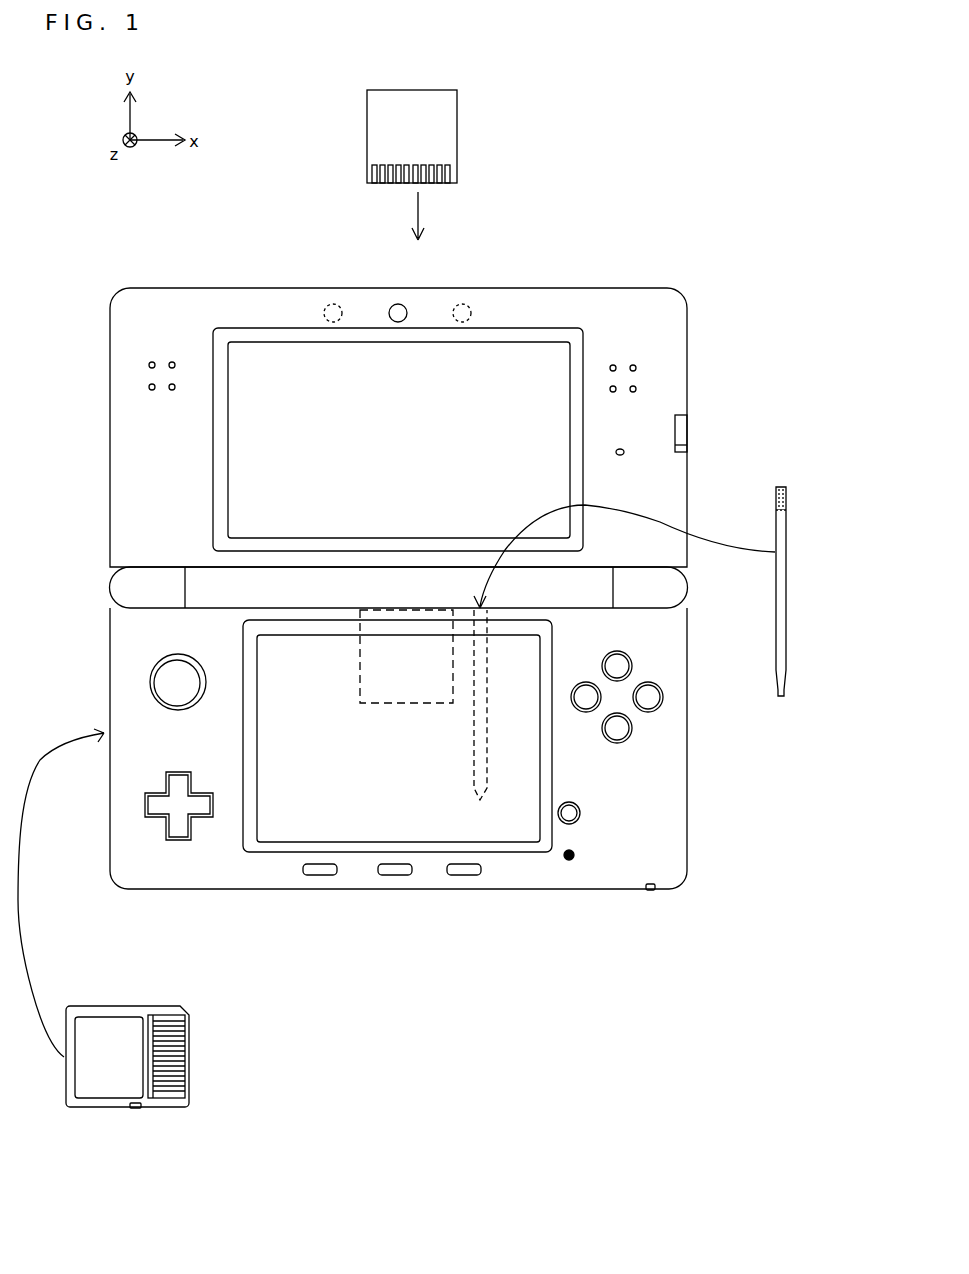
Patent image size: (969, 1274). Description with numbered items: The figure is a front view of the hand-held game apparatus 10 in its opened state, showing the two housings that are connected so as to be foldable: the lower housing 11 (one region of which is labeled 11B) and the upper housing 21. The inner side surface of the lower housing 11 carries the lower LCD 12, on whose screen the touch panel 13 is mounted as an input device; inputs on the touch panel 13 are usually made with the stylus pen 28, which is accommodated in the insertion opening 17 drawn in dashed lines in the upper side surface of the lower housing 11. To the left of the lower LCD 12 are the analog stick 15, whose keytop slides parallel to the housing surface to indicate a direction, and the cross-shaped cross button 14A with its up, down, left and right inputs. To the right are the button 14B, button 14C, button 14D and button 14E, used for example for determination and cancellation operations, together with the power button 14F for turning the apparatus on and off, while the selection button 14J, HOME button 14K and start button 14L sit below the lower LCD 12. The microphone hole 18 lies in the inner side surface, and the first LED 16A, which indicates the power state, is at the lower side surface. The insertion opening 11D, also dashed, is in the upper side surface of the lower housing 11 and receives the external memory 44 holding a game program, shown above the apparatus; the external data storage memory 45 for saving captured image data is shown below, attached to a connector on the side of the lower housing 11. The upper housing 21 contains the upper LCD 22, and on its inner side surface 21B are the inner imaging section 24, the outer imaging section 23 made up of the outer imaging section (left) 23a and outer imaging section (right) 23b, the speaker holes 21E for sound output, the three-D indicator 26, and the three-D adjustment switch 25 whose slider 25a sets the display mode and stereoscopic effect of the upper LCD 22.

The game apparatus 10 is at (678, 257).
The lower housing 11 is at (276, 885).
The inner side surface of lower housing 11B is at (675, 795).
The insertion opening 11D is at (360, 608).
The lower LCD 12 is at (367, 822).
The touch panel 13 is at (522, 818).
The cross button 14A is at (158, 799).
The button 14B is at (652, 692).
The button 14C is at (612, 733).
The button 14D is at (620, 660).
The button 14E is at (585, 702).
The power button 14F is at (572, 812).
The selection button 14J is at (318, 876).
The HOME button 14K is at (400, 876).
The start button 14L is at (465, 876).
The analog stick 15 is at (165, 690).
The first LED 16A is at (650, 894).
The insertion opening 17 is at (487, 612).
The microphone hole 18 is at (569, 862).
The upper housing 21 is at (608, 288).
The inner side surface 21B is at (145, 318).
The speaker holes 21E is at (150, 365).
The upper LCD 22 is at (274, 338).
The outer imaging section 23 is at (402, 270).
The outer imaging section (left) 23a is at (333, 303).
The outer imaging section (right) 23b is at (462, 303).
The inner imaging section 24 is at (398, 304).
The 3D adjustment switch 25 is at (687, 432).
The slider 25a is at (687, 450).
The 3D indicator 26 is at (625, 454).
The stylus pen 28 is at (787, 580).
The external memory 44 is at (430, 90).
The external data storage memory 45 is at (130, 1110).